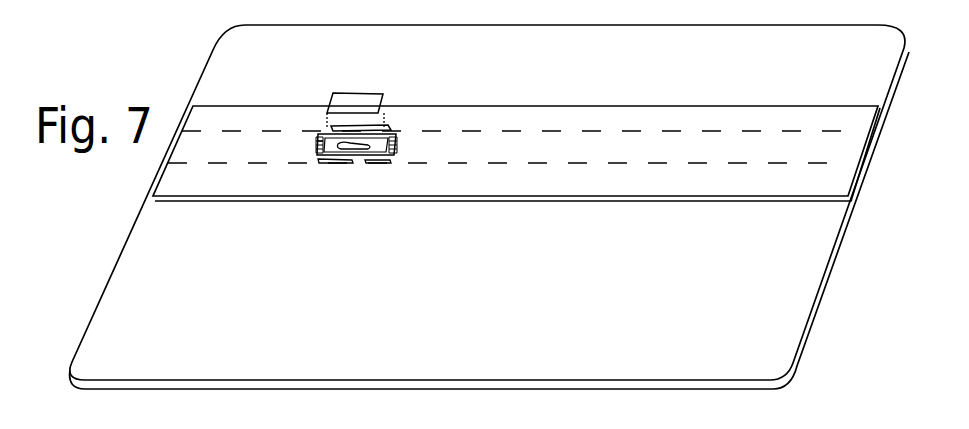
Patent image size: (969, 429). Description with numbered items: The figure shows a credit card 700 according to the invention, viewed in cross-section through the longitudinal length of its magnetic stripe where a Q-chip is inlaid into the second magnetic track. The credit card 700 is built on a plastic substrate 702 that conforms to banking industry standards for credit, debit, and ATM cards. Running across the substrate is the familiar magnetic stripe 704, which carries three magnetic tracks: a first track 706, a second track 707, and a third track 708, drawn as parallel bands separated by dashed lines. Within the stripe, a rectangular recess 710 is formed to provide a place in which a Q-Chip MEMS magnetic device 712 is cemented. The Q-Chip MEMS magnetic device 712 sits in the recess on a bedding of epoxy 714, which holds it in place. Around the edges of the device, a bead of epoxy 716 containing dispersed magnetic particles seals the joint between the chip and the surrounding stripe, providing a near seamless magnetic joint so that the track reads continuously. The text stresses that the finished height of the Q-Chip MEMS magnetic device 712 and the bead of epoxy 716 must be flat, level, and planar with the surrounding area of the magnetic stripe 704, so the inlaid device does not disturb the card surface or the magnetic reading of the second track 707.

The credit card 700 is at (165, 62).
The plastic substrate 702 is at (127, 233).
The magnetic stripe 704 is at (295, 201).
The Track-1 706 is at (621, 128).
The Track-2 707 is at (607, 156).
The Track-3 708 is at (596, 188).
The rectangular recess 710 is at (389, 155).
The Q-Chip MEMS magnetic device 712 is at (370, 93).
The bedding of epoxy 714 is at (360, 150).
The bead of epoxy 716 is at (317, 141).